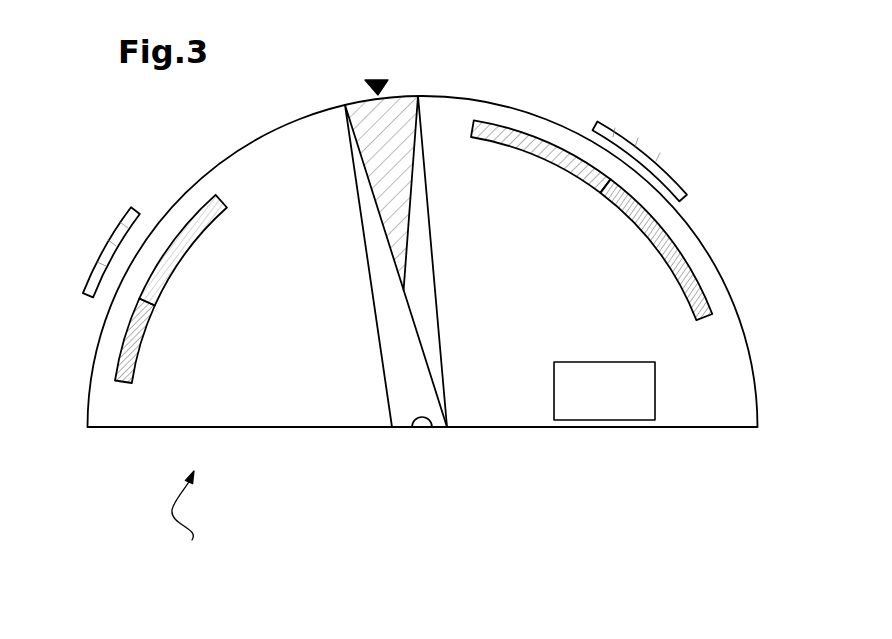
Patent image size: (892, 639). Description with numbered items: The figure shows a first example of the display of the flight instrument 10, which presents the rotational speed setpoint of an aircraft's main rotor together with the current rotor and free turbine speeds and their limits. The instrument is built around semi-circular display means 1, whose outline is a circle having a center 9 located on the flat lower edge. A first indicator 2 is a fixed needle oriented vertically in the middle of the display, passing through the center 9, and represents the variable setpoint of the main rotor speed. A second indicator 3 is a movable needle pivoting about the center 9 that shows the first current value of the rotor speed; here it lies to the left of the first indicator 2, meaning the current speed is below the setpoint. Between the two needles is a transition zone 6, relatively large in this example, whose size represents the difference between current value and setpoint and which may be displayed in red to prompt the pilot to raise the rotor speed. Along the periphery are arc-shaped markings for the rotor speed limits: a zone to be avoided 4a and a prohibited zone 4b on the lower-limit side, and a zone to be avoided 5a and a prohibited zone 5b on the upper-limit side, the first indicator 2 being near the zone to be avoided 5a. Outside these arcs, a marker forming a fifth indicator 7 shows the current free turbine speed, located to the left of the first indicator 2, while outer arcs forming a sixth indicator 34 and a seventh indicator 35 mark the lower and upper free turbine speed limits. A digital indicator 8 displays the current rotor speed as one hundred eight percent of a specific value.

The semi-circular display means 1 is at (693, 405).
The first indicator 2 is at (437, 301).
The second indicator 3 is at (384, 366).
The first zone to be avoided 4a is at (178, 247).
The prohibited second zone 4b is at (133, 338).
The first zone to be avoided 5a is at (540, 148).
The prohibited second zone 5b is at (690, 273).
The transition zone 6 is at (373, 128).
The fifth indicator 7 is at (378, 80).
The digital indicator 8 is at (577, 410).
The center 9 is at (421, 425).
The flight instrument 10 is at (188, 524).
The sixth indicator 34 is at (110, 250).
The seventh indicator 35 is at (640, 148).